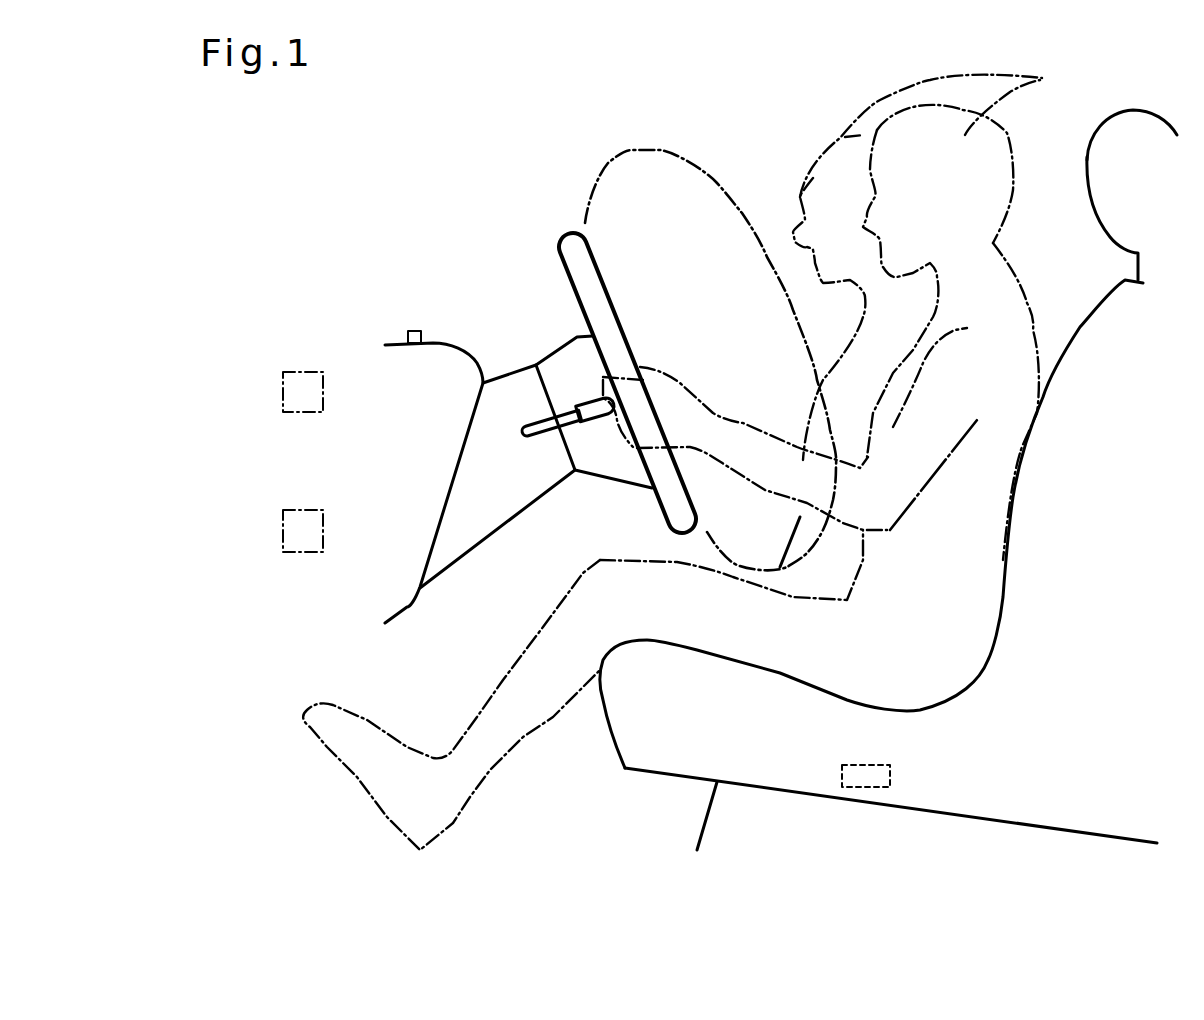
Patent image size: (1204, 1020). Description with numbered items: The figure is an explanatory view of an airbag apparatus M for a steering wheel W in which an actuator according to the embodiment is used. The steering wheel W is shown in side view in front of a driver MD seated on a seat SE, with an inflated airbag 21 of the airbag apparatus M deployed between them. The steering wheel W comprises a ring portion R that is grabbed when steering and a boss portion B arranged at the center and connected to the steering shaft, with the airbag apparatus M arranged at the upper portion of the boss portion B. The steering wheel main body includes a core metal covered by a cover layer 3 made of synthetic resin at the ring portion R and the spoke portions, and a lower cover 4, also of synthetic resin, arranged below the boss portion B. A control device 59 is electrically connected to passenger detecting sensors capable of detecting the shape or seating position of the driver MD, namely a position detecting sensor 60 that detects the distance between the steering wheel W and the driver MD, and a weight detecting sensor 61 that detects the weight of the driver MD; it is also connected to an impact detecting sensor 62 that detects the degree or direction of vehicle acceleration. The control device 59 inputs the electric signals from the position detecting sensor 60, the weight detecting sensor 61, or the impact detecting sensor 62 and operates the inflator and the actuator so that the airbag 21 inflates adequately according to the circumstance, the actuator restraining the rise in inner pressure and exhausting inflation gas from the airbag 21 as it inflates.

The cover layer 3 is at (589, 376).
The lower cover 4 is at (570, 375).
The airbag 21 is at (742, 213).
The control device 59 is at (305, 370).
The position detecting sensor 60 is at (413, 331).
The weight detecting sensor 61 is at (857, 787).
The impact detecting sensor 62 is at (305, 552).
The ring portion R is at (542, 234).
The steering wheel W is at (519, 314).
The boss portion B is at (583, 502).
The airbag apparatus M is at (630, 497).
The driver MD is at (945, 129).
The seat SE is at (993, 797).